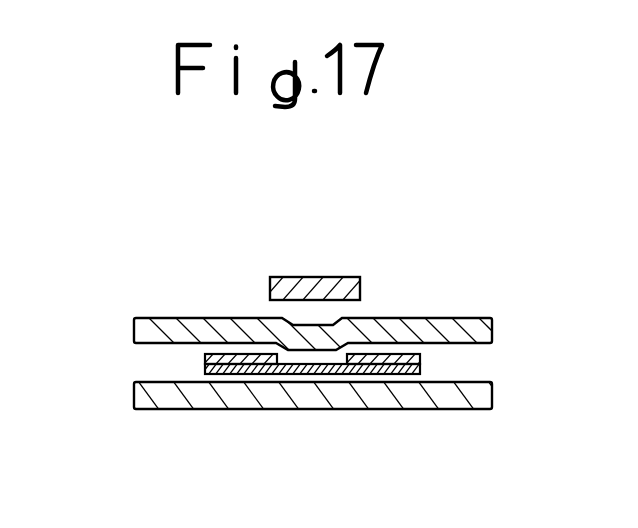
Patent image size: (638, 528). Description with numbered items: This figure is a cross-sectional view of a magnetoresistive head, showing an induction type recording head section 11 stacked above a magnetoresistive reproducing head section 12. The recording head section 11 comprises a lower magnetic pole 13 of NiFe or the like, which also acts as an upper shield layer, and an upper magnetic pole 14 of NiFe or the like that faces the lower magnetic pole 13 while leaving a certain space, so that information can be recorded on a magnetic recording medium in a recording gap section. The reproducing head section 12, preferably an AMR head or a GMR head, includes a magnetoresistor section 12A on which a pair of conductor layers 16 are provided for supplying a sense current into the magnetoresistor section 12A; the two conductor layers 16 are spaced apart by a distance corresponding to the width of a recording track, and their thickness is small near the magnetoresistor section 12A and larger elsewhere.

The induction type recording head section 11 is at (232, 283).
The magnetoresistive reproducing head section 12 is at (182, 360).
The magnetoresistor section 12A is at (373, 377).
The lower magnetic pole 13 is at (465, 318).
The upper magnetic pole 14 is at (338, 275).
The conductor layers 16 is at (420, 362).